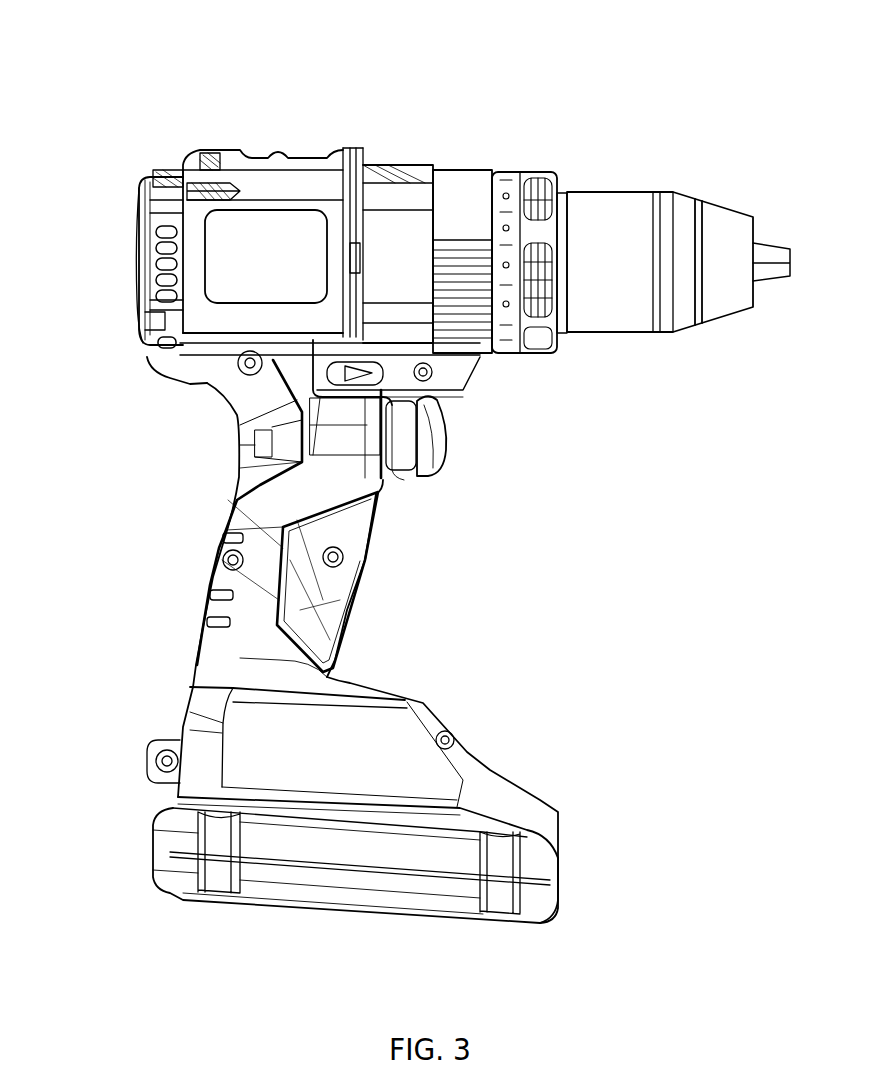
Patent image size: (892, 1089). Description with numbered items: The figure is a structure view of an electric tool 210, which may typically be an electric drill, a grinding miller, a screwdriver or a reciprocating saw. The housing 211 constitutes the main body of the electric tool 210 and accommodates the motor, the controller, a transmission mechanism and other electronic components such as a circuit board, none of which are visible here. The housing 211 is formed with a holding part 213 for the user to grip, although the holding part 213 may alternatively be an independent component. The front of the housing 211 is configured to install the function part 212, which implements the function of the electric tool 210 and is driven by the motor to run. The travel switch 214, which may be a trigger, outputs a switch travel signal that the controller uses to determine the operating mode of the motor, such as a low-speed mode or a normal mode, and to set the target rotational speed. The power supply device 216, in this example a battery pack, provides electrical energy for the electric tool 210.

The electric tool 210 is at (352, 130).
The housing 211 is at (137, 252).
The function part 212 is at (768, 243).
The holding part 213 is at (332, 572).
The travel switch 214 is at (429, 440).
The power supply device 216 is at (317, 907).